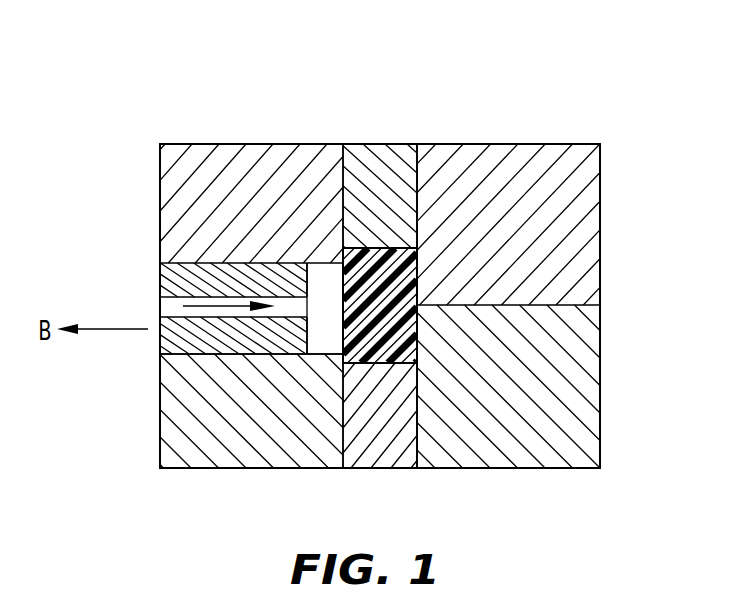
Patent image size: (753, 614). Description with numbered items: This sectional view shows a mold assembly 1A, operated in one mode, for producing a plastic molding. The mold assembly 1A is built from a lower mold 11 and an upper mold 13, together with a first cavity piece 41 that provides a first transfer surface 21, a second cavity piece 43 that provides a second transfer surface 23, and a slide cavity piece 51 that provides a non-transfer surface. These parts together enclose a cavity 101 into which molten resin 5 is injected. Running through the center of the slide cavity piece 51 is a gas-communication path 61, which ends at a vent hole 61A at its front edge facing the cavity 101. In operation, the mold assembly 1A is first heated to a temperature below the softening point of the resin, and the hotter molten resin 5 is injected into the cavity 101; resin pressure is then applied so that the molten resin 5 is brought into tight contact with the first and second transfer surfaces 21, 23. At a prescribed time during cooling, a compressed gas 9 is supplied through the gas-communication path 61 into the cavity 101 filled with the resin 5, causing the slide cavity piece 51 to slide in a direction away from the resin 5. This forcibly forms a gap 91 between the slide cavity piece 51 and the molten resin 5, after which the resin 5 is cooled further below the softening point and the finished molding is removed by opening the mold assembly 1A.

The mold assembly 1A is at (194, 76).
The upper mold 13 is at (580, 216).
The lower mold 11 is at (585, 368).
The second cavity piece 43 is at (386, 162).
The first cavity piece 41 is at (380, 448).
The molten resin 5 is at (410, 328).
The second transfer surface 23 is at (423, 252).
The first transfer surface 21 is at (387, 366).
The cavity 101 is at (350, 245).
The gap 91 is at (337, 287).
The gas-communication path 61 is at (160, 293).
The vent hole 61A is at (313, 306).
The slide cavity piece 51 is at (222, 343).
The compressed gas 9 is at (176, 306).